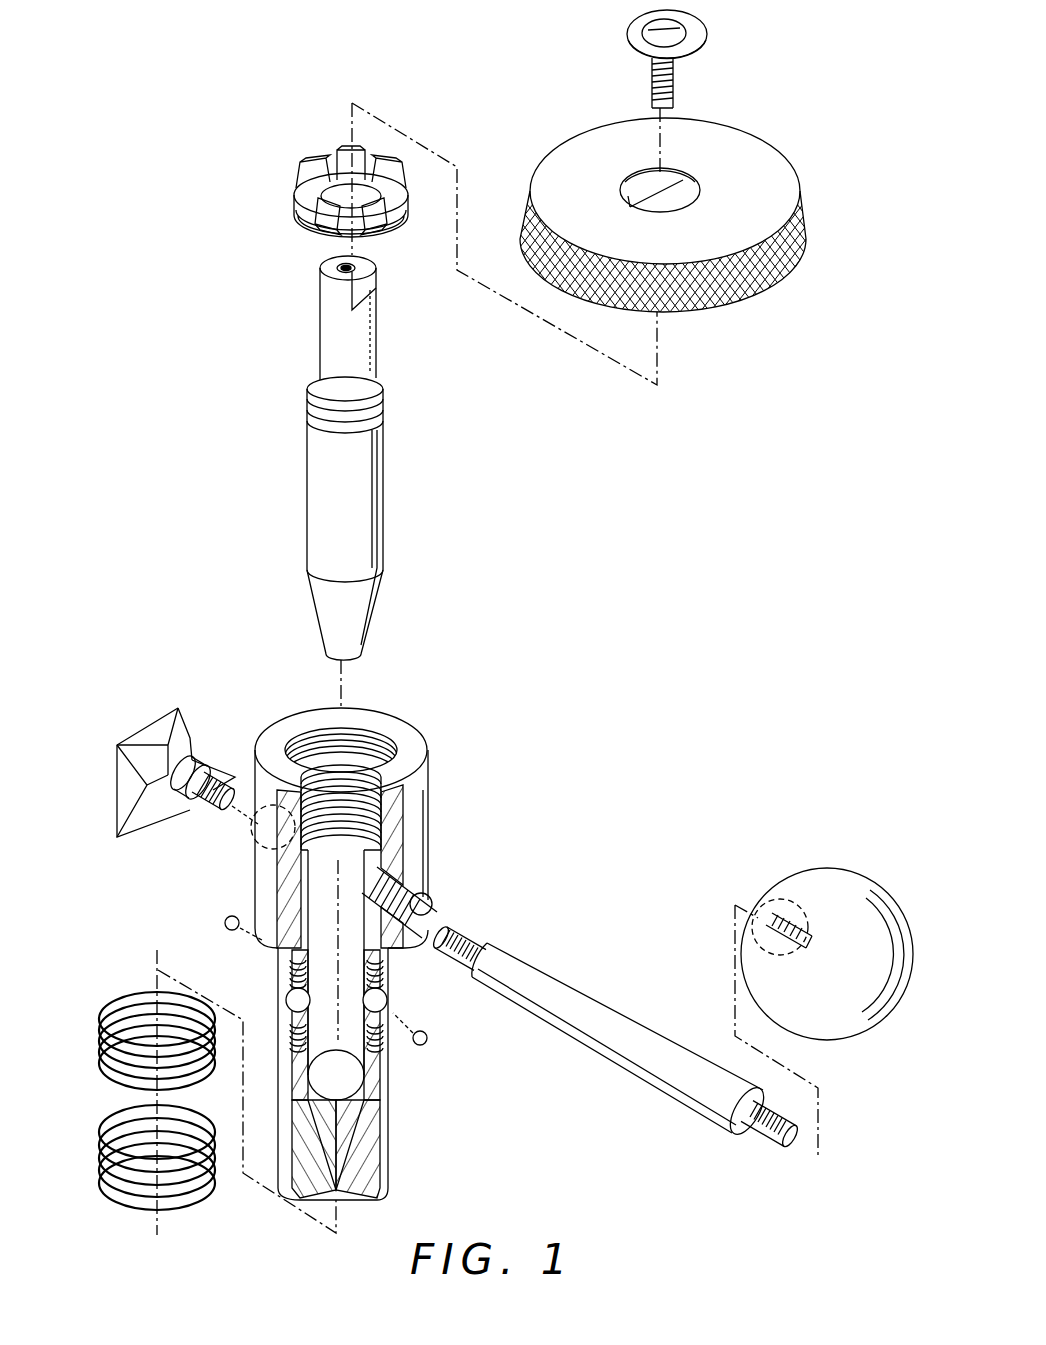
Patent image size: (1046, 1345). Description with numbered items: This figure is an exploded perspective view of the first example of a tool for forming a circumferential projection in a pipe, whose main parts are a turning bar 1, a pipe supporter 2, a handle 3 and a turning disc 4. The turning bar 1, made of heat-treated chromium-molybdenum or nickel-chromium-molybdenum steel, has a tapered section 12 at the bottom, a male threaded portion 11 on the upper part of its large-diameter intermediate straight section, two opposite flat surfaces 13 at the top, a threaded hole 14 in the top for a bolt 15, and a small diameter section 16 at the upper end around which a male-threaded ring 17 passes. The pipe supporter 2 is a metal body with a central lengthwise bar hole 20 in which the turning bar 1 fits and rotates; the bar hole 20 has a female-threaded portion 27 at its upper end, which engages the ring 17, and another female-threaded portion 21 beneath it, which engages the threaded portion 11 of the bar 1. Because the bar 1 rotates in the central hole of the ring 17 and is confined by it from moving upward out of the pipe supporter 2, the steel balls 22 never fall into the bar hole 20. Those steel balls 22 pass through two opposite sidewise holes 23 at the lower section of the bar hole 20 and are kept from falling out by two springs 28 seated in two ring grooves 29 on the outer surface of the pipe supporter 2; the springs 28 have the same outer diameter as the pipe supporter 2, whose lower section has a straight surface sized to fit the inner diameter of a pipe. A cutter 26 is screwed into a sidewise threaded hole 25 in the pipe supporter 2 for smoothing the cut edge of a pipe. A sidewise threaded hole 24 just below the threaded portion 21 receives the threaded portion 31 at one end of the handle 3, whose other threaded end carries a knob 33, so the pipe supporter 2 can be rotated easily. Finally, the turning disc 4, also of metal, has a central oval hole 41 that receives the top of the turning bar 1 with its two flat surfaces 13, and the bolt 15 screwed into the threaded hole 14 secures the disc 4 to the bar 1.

The turning bar 1 is at (357, 509).
The pipe supporter 2 is at (415, 816).
The handle 3 is at (582, 996).
The turning disc 4 is at (738, 240).
The threaded portion 11 is at (386, 406).
The tapered section 12 is at (354, 614).
The flat surfaces 13 is at (370, 289).
The threaded hole 14 is at (337, 268).
The bolt 15 is at (700, 42).
The small diameter section 16 is at (343, 357).
The male-threaded ring 17 is at (300, 172).
The bar hole 20 is at (410, 764).
The threaded portion 21 is at (372, 862).
The steel balls 22 is at (226, 918).
The sidewise holes 23 is at (286, 1001).
The sidewise threaded hole 24 is at (432, 908).
The sidewise threaded hole 25 is at (262, 838).
The cutter 26 is at (166, 730).
The female-threaded portion 27 is at (380, 745).
The springs 28 is at (138, 995).
The ring grooves 29 is at (284, 975).
The threaded portion 31 is at (484, 945).
The knob 33 is at (826, 878).
The oval hole 41 is at (700, 186).